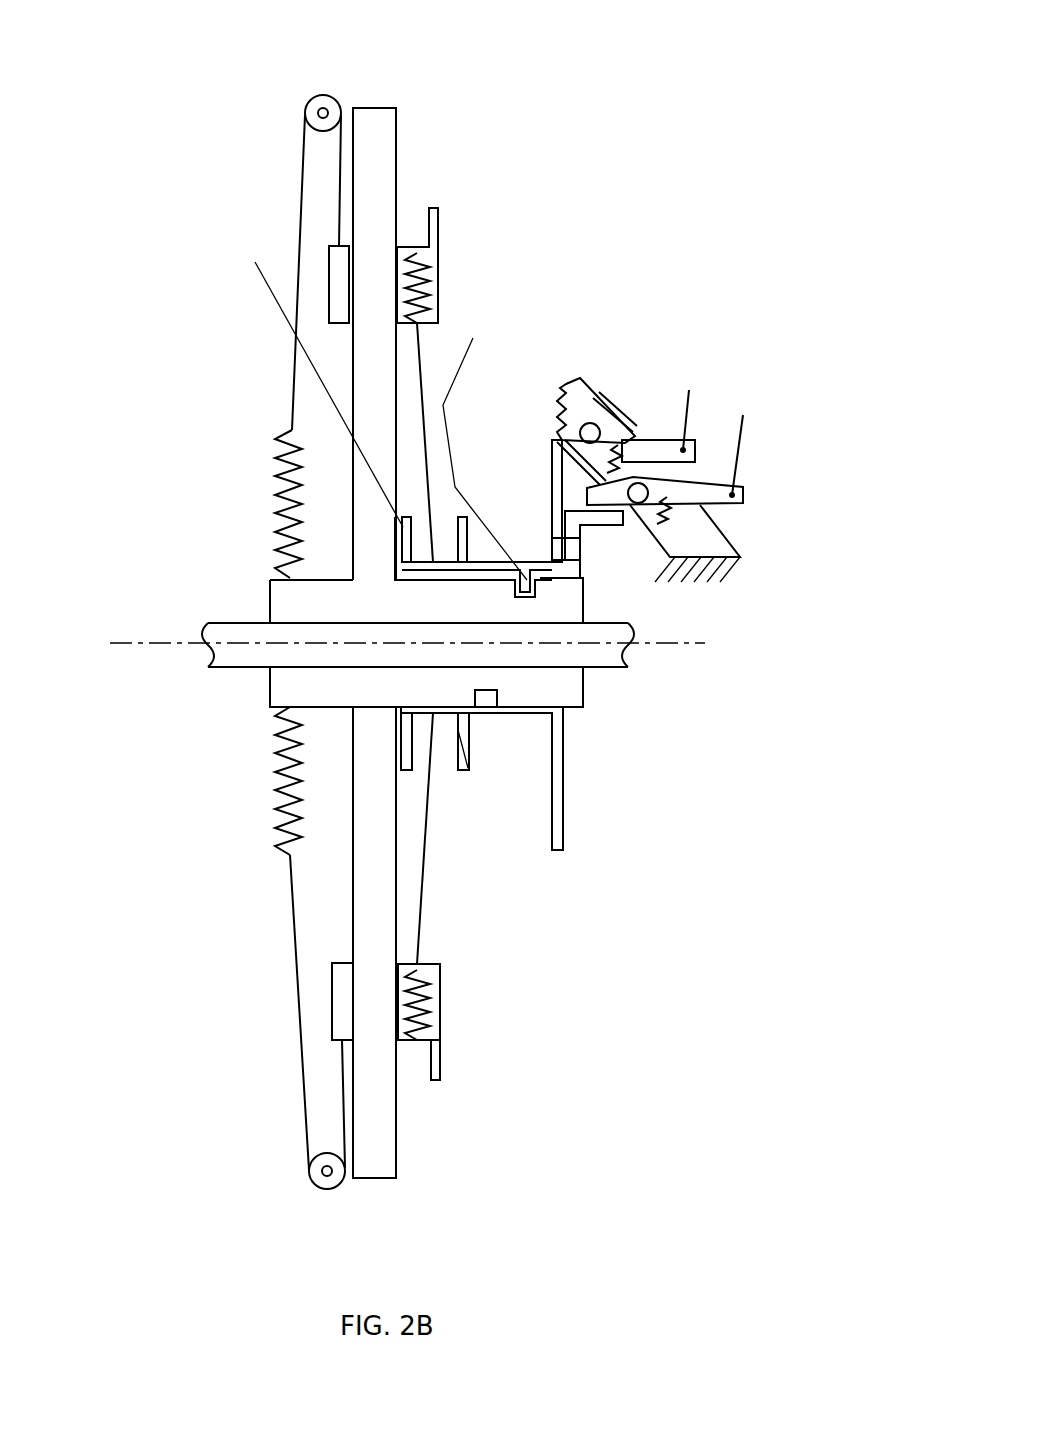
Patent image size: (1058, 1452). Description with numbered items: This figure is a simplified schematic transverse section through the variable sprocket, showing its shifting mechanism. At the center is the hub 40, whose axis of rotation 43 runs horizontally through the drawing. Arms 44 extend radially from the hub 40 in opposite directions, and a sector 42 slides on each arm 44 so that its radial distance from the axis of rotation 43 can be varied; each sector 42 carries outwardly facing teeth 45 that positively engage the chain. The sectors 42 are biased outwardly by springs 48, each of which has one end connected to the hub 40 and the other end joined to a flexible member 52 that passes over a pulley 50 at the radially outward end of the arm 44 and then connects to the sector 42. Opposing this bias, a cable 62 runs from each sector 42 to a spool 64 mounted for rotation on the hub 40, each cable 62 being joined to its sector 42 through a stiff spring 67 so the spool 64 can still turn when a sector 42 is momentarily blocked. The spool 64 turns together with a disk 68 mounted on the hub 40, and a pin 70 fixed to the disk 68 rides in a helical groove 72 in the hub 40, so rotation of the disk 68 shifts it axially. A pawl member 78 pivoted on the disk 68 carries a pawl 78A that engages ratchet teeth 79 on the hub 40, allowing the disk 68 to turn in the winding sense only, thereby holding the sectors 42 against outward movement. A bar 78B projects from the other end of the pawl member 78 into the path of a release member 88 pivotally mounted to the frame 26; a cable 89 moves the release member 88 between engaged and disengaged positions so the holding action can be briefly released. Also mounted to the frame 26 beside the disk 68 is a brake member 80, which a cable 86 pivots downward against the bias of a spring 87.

The frame 26 is at (683, 538).
The hub 40 is at (563, 682).
The sectors 42 is at (338, 282).
The axis of rotation 43 is at (258, 637).
The arms 44 is at (365, 152).
The teeth 45 is at (437, 213).
The springs 48 is at (275, 512).
The pulleys 50 is at (323, 97).
The flexible member 52 is at (300, 1015).
The cables 62 is at (423, 385).
The spool 64 is at (255, 262).
The spring 67 is at (440, 275).
The disk 68 is at (548, 440).
The pin 70 is at (473, 338).
The helical groove 72 is at (595, 582).
The pawl member 78 is at (550, 488).
The pawl 78A is at (572, 548).
The bar 78B is at (585, 578).
The ratchet teeth 79 is at (600, 522).
The brake member 80 is at (575, 408).
The cable 86 is at (690, 406).
The spring 87 is at (633, 440).
The release member 88 is at (745, 500).
The cable 89 is at (742, 455).